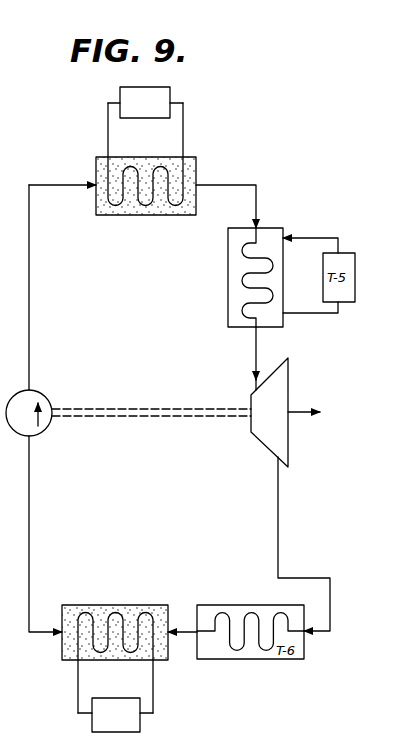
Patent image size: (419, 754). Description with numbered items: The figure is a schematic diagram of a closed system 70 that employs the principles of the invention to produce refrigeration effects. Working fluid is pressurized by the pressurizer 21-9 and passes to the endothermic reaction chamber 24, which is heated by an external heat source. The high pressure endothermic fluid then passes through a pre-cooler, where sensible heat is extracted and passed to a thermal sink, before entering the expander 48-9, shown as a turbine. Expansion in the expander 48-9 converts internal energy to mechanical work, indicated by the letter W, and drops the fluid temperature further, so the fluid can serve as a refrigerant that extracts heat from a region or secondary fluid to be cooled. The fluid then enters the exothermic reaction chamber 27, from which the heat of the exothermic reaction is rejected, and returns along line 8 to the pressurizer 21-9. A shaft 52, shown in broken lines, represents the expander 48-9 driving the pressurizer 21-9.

The return line 8 is at (0, 207).
The endothermic reaction chamber 24 is at (137, 215).
The system 70 is at (278, 182).
The shaft 52 is at (133, 409).
The pressurizer 21-9 is at (41, 434).
The expander 48-9 is at (283, 438).
The exothermic reaction chamber 27 is at (110, 605).